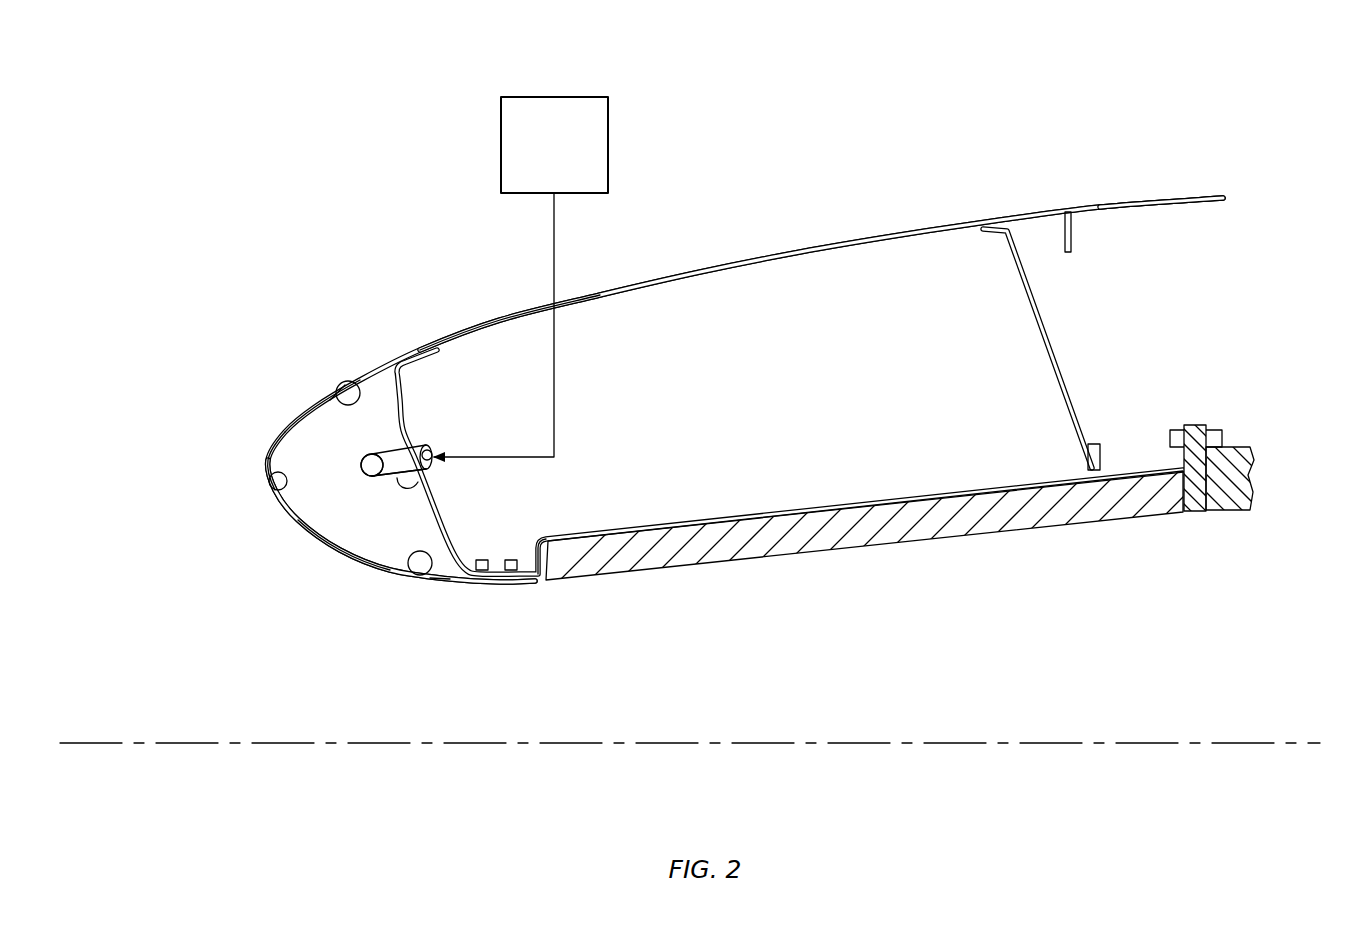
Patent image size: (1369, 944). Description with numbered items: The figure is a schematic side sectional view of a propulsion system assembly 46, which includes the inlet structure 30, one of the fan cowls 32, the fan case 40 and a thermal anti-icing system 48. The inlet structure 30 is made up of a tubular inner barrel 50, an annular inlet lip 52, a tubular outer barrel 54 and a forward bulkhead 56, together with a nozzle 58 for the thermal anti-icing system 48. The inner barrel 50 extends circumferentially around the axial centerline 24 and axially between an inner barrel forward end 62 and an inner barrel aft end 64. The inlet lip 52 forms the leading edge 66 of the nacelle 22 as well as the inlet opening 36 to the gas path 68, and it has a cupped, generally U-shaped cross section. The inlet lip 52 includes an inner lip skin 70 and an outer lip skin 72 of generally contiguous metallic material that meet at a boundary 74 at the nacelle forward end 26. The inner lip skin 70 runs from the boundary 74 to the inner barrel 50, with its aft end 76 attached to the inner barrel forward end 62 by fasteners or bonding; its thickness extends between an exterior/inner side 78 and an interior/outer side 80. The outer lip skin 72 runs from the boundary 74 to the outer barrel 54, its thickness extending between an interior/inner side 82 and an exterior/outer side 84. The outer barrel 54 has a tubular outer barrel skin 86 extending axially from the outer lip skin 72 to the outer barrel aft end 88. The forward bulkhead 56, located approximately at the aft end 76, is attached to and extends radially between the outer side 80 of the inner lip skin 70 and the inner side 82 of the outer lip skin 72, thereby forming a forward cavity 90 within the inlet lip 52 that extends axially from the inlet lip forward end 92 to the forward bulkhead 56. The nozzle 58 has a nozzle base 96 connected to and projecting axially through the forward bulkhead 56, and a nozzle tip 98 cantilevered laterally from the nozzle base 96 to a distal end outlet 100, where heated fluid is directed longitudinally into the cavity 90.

The nacelle 22 is at (1161, 140).
The axial centerline 24 is at (1276, 745).
The nacelle forward end 26 is at (263, 461).
The inlet structure 30 is at (748, 250).
The fan cowl 32 is at (1198, 192).
The inlet opening 36 is at (286, 650).
The fan case 40 is at (1248, 489).
The propulsion system assembly 46 is at (368, 140).
The thermal anti-icing system 48 is at (537, 161).
The inner barrel 50 is at (778, 568).
The inlet lip 52 is at (388, 580).
The outer barrel 54 is at (825, 245).
The forward bulkhead 56 is at (450, 527).
The nozzle 58 is at (380, 441).
The inner barrel forward end 62 is at (546, 588).
The inner barrel aft end 64 is at (1193, 512).
The leading edge 66 is at (182, 461).
The gas path 68 is at (608, 713).
The inner lip skin 70 is at (333, 552).
The outer lip skin 72 is at (318, 393).
The boundary 74 is at (182, 461).
The inner lip skin aft end 76 is at (531, 588).
The exterior/inner side 78 is at (437, 583).
The interior/outer side 80 is at (420, 577).
The interior/inner side 82 is at (342, 388).
The exterior/outer side 84 is at (362, 381).
The outer barrel skin 86 is at (497, 318).
The outer barrel aft end 88 is at (1062, 214).
The cavity 90 is at (306, 503).
The inlet lip forward end 92 is at (272, 490).
The nozzle base 96 is at (419, 483).
The nozzle tip 98 is at (368, 478).
The distal end outlet 100 is at (361, 463).